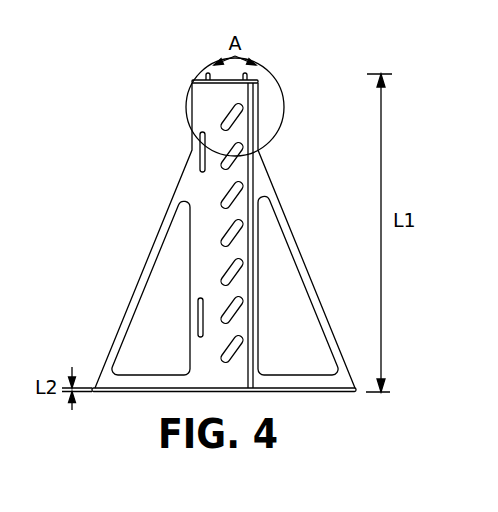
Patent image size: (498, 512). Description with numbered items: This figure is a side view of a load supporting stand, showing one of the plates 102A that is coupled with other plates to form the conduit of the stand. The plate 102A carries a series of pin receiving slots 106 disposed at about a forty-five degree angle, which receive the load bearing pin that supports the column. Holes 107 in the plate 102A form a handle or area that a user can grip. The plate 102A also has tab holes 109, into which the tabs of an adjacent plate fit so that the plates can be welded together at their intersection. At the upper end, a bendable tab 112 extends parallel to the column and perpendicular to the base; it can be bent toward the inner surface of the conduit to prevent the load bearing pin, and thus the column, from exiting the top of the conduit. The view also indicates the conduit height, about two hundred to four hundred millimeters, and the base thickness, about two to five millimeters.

The plate 102A is at (193, 157).
The pin receiving slot 106 is at (238, 342).
The hole 107 is at (137, 305).
The tab hole 109 is at (200, 298).
The bendable tab 112 is at (256, 64).